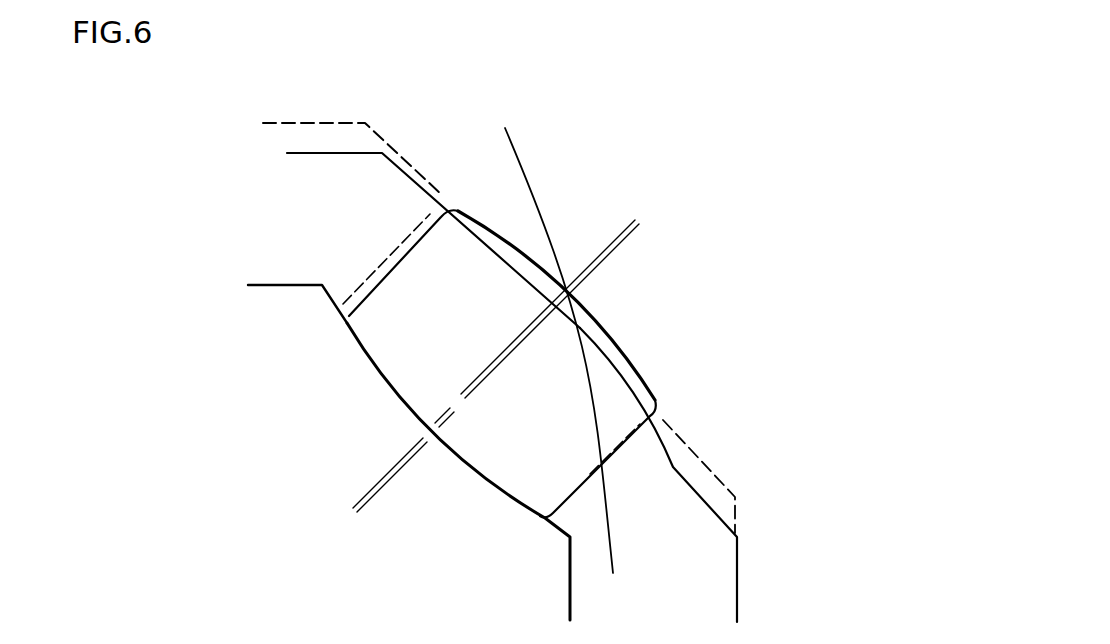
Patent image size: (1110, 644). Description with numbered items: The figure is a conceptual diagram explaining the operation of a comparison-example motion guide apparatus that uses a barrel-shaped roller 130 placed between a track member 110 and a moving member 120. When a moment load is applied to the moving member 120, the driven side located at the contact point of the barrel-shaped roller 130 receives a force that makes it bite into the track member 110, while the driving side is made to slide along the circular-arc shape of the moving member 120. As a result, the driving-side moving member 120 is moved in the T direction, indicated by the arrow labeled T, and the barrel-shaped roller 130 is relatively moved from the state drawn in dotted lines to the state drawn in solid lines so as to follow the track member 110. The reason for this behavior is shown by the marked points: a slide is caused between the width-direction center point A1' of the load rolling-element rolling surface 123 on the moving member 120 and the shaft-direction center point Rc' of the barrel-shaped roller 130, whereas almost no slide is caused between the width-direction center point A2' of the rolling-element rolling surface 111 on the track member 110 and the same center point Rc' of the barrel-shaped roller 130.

The track member 110 is at (437, 609).
The rolling-element rolling surface 111 is at (497, 478).
The moving member 120 is at (805, 375).
The load rolling-element rolling surface 123 is at (675, 462).
The barrel-shaped roller 130 is at (440, 268).
The T direction T is at (543, 332).
The width-direction center point of the load rolling-element rolling surface A1' is at (635, 311).
The width-direction center point of the rolling-element rolling surface A2' is at (381, 418).
The shaft-direction center point of the barrel-shaped roller Rc' is at (499, 375).